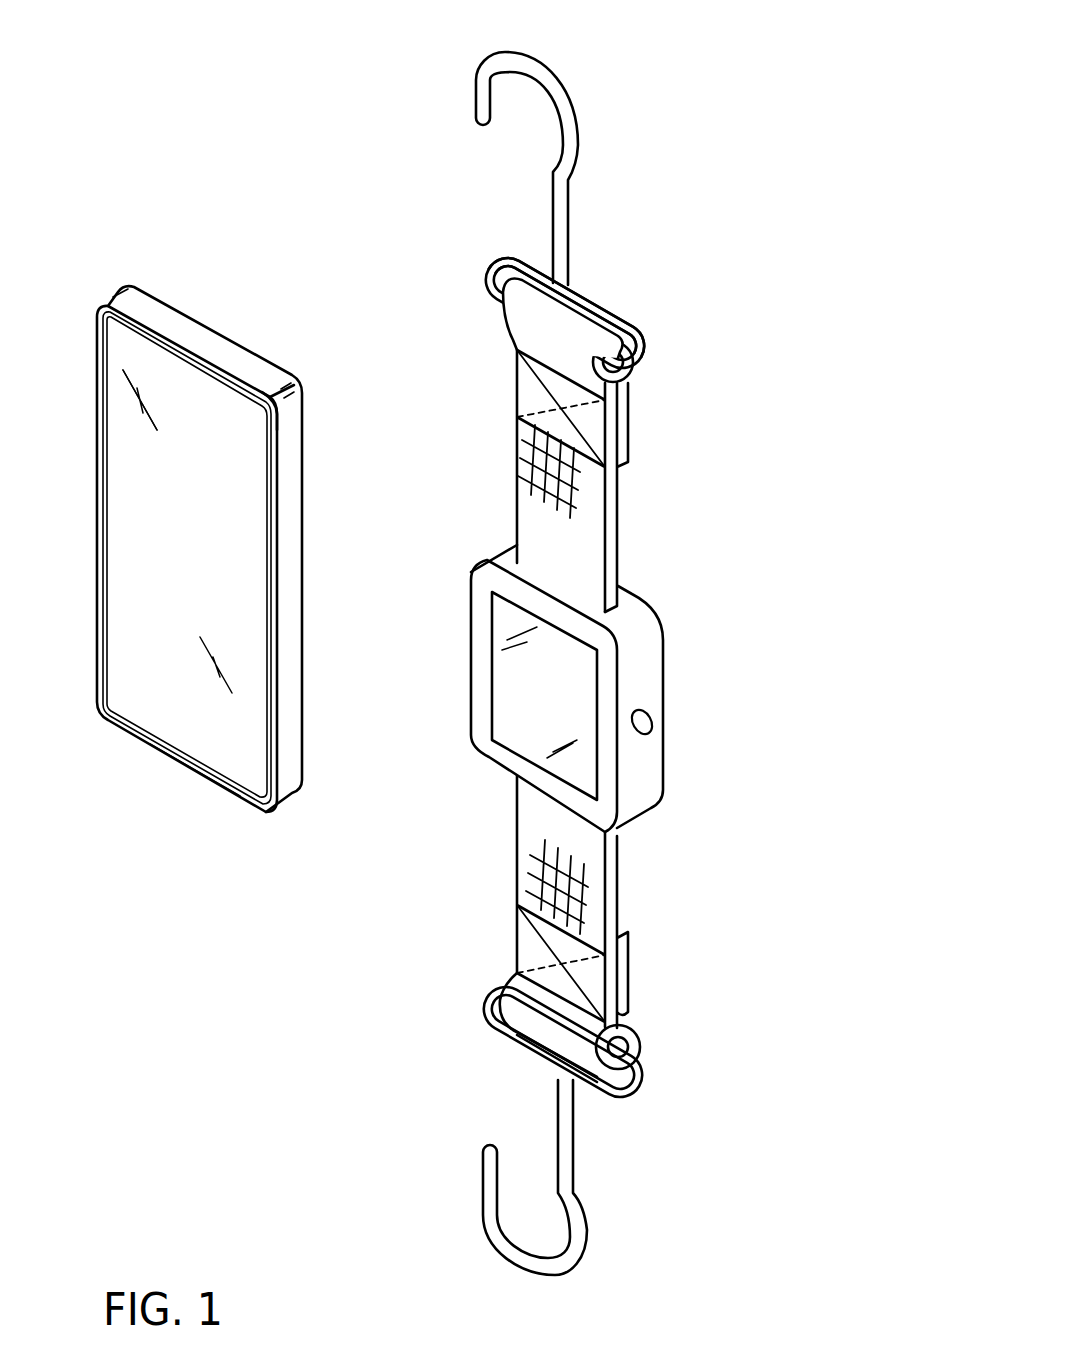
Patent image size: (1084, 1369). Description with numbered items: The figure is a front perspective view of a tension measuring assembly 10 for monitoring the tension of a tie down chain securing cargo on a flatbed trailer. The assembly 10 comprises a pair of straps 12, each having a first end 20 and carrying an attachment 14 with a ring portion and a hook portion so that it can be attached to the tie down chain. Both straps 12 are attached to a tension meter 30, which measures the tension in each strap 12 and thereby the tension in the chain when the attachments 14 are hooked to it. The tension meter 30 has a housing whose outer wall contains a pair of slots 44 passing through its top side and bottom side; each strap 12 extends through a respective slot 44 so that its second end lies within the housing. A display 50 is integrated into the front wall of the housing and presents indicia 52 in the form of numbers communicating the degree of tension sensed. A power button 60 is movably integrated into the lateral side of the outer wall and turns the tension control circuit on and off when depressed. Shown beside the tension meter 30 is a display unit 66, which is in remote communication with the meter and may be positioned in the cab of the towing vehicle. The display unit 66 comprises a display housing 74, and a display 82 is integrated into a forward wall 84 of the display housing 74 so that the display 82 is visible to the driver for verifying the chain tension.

The tension measuring assembly 10 is at (805, 240).
The straps 12 is at (517, 470).
The attachment 14 is at (593, 108).
The first end 20 is at (545, 696).
The tension meter 30 is at (576, 684).
The slots 44 is at (573, 590).
The display 50 is at (548, 778).
The indicia 52 is at (478, 709).
The power button 60 is at (650, 732).
The display unit 66 is at (222, 296).
The display housing 74 is at (298, 392).
The display 82 is at (152, 690).
The forward wall 84 is at (200, 788).